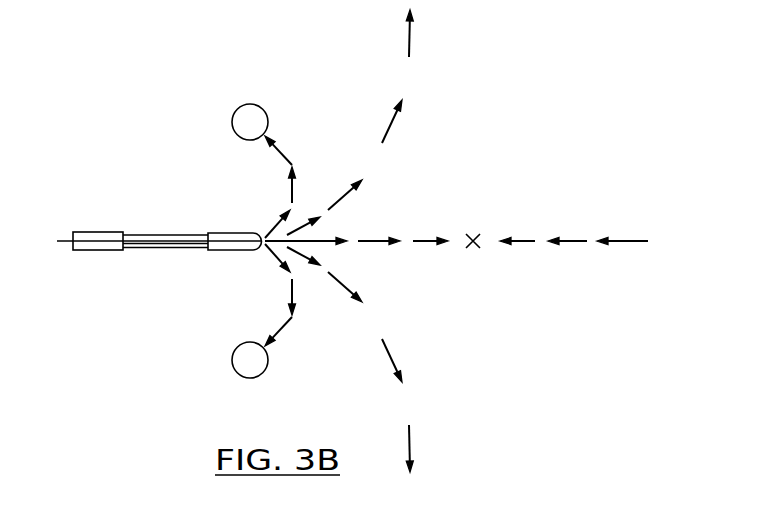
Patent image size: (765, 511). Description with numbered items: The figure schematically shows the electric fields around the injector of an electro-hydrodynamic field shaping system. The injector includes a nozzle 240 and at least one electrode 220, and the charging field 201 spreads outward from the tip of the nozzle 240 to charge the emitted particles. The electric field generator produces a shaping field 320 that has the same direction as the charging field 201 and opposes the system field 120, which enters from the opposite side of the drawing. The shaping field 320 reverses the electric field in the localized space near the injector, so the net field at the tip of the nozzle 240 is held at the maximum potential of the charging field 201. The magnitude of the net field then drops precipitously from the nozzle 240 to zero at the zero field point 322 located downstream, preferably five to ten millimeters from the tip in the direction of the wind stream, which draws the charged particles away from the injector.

The system field 120 is at (640, 241).
The charging field 201 is at (293, 200).
The electrode 220 is at (248, 104).
The nozzle 240 is at (82, 232).
The shaping field 320 is at (409, 50).
The zero field point 322 is at (473, 249).